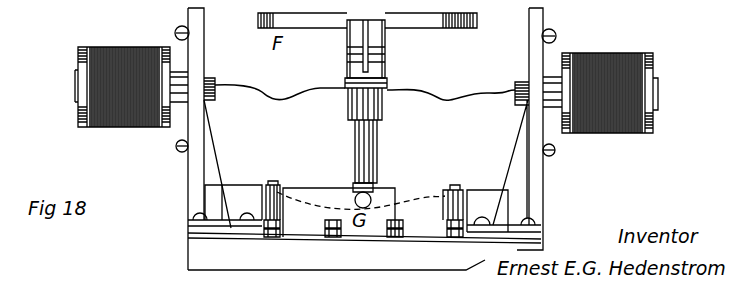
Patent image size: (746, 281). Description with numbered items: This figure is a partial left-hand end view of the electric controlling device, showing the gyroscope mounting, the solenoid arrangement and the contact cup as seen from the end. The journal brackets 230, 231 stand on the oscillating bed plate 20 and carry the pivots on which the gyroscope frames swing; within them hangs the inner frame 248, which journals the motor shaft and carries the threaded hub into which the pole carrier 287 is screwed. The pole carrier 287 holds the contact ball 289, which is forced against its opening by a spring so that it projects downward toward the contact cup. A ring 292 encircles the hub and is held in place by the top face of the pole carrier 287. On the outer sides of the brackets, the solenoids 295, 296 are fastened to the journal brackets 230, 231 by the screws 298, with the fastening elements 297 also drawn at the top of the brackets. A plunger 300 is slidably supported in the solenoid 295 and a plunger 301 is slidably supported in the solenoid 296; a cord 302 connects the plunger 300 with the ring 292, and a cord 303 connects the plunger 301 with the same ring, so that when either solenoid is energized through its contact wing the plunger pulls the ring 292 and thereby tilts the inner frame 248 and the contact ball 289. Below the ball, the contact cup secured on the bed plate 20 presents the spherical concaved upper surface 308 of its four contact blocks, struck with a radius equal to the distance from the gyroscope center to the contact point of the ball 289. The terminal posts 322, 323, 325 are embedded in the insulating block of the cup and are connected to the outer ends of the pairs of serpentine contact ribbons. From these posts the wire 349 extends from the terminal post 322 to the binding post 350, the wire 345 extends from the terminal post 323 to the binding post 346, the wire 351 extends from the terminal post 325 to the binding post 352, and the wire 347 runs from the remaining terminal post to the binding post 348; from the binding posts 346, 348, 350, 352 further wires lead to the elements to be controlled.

The oscillating bed plate 20 is at (188, 240).
The journal bracket 230 is at (188, 165).
The journal bracket 231 is at (545, 172).
The inner frame 248 is at (385, 50).
The pole carrier 287 is at (380, 123).
The contact ball 289 is at (355, 203).
The ring 292 is at (347, 89).
The solenoid 295 is at (86, 47).
The solenoid 296 is at (663, 33).
The upper bolt 297 is at (182, 44).
The screw 298 is at (176, 146).
The plunger 300 is at (213, 77).
The plunger 301 is at (520, 83).
The cord 302 is at (291, 87).
The cord 303 is at (453, 102).
The spherical concaved upper surface 308 is at (283, 190).
The terminal post 322 is at (375, 178).
The terminal post 323 is at (268, 182).
The terminal post 325 is at (455, 185).
The wire 345 is at (222, 202).
The binding post 346 is at (281, 206).
The wire 347 is at (250, 237).
The binding post 348 is at (334, 220).
The wire 349 is at (375, 190).
The binding post 350 is at (398, 220).
The wire 351 is at (490, 183).
The binding post 352 is at (455, 230).